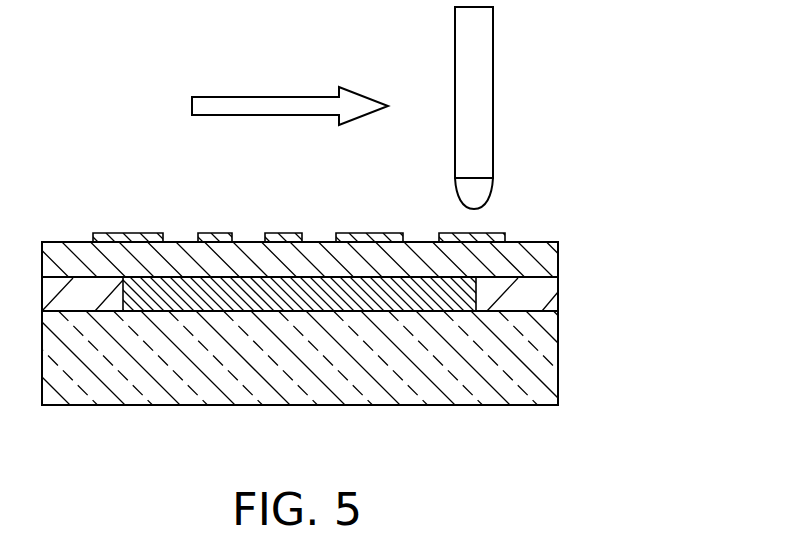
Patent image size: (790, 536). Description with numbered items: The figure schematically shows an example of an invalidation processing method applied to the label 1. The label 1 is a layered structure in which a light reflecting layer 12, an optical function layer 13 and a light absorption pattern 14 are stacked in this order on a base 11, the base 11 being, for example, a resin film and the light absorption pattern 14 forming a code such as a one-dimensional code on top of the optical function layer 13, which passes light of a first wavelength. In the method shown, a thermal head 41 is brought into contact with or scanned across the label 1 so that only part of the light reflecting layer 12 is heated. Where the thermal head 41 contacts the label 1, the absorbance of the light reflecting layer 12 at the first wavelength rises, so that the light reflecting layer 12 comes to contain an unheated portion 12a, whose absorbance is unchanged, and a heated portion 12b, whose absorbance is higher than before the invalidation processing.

The label 1 is at (568, 189).
The base 11 is at (548, 349).
The light reflecting layer 12 is at (341, 362).
The unheated portion 12a is at (82, 295).
The heated portion 12b is at (295, 298).
The optical function layer 13 is at (548, 261).
The light absorption pattern 14 is at (125, 232).
The thermal head 41 is at (483, 28).